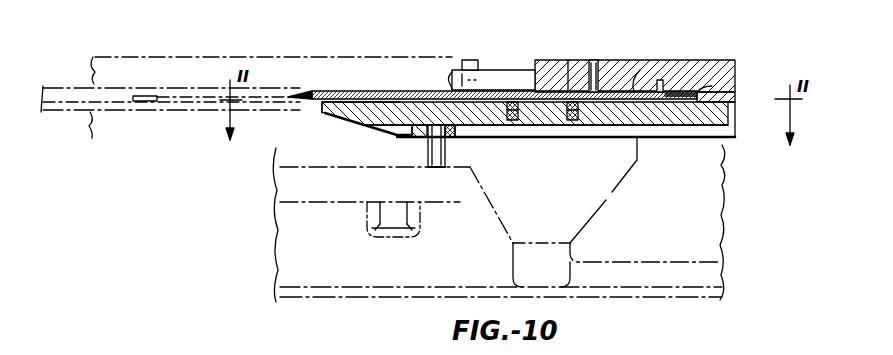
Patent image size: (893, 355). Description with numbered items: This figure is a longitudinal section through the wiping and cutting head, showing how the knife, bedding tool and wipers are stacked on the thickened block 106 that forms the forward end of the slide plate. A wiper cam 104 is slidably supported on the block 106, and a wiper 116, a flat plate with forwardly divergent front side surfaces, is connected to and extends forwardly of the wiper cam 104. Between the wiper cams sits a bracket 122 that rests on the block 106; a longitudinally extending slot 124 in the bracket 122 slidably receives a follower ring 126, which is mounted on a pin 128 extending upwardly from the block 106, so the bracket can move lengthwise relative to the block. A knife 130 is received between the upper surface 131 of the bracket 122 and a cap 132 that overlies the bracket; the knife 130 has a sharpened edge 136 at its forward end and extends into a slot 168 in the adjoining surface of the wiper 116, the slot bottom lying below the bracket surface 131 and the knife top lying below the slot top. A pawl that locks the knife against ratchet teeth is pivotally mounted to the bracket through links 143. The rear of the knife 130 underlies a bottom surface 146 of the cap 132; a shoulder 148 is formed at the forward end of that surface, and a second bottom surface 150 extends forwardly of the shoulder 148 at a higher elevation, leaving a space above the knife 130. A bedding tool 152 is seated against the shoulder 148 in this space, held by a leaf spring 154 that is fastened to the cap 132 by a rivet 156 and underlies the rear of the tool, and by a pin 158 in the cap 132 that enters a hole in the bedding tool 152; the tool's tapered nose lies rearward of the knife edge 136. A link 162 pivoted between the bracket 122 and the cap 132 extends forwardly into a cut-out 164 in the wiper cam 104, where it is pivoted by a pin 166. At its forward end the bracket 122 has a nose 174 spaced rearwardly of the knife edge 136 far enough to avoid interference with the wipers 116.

The wiper cam 104 is at (324, 72).
The thickened block 106 is at (592, 202).
The wiper 116 is at (192, 89).
The bracket 122 is at (722, 116).
The longitudinally extending slot 124 is at (668, 128).
The follower ring 126 is at (452, 136).
The pin 128 is at (427, 168).
The knife 130 is at (314, 103).
The upper surface of the bracket 131 is at (356, 106).
The cap 132 is at (718, 62).
The sharpened edge 136 is at (300, 96).
The links 143 is at (573, 122).
The bottom surface of the cap 146 is at (714, 90).
The shoulder 148 is at (640, 70).
The bottom surface of the cap 150 is at (569, 66).
The bedding tool 152 is at (392, 90).
The leaf spring 154 is at (660, 80).
The rivet 156 is at (690, 92).
The pin 158 is at (595, 72).
The links 162 is at (506, 78).
The cut-out 164 is at (448, 76).
The pin 166 is at (470, 62).
The slot 168 is at (152, 98).
The nose 174 is at (333, 118).